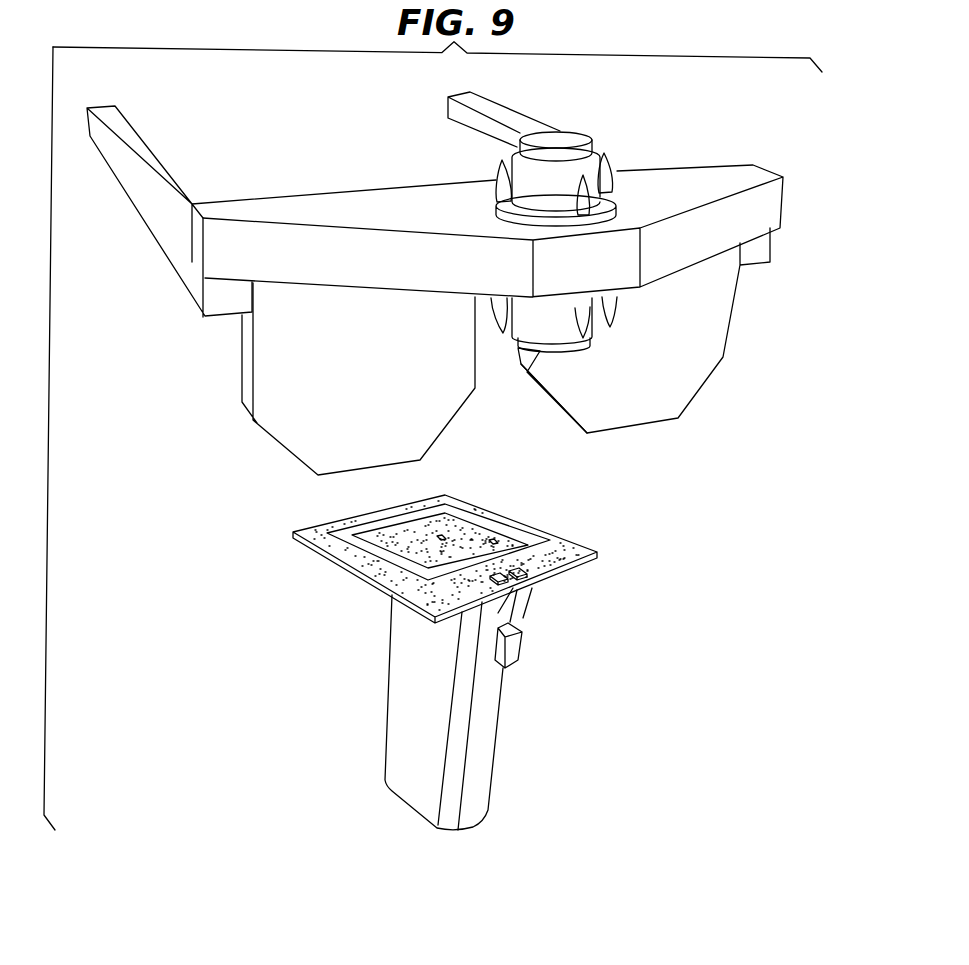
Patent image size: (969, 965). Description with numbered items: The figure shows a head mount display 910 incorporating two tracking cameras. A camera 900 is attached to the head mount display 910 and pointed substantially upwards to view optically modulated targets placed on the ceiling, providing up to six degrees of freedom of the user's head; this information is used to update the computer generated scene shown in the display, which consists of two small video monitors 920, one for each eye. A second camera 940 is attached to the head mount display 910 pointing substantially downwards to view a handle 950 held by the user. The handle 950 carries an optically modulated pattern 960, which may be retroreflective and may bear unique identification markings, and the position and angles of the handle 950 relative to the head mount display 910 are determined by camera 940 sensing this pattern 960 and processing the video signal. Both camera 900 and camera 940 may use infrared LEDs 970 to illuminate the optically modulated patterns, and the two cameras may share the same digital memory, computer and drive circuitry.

The camera 900 is at (595, 153).
The head mount display 910 is at (327, 197).
The video monitors 920 is at (302, 445).
The camera 940 is at (528, 372).
The handle 950 is at (502, 708).
The optically modulated pattern 960 is at (537, 530).
The infrared LEDs 970 is at (493, 175).